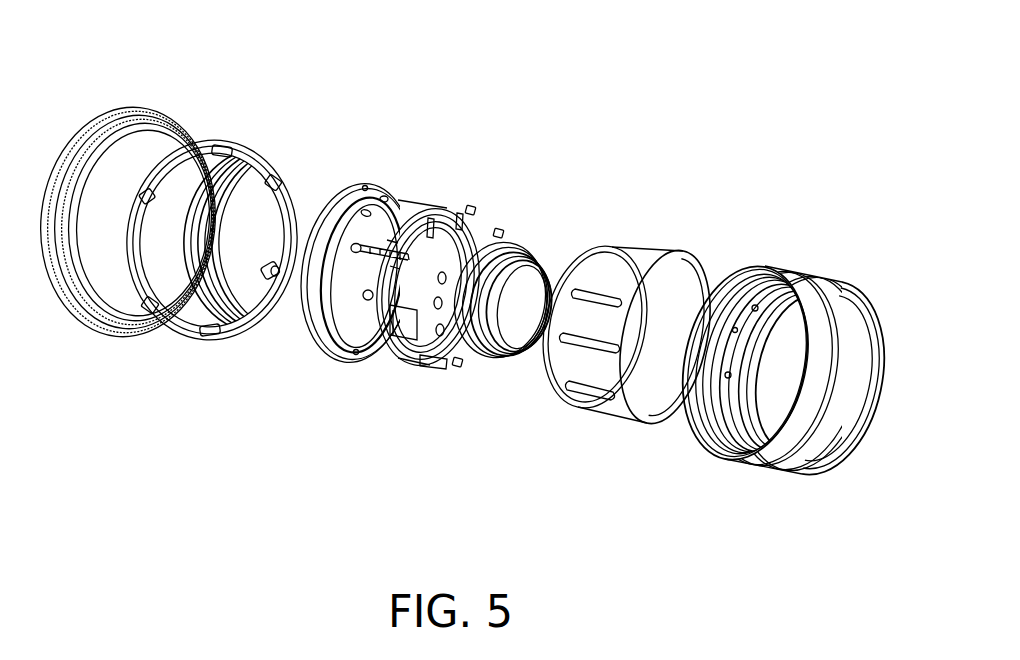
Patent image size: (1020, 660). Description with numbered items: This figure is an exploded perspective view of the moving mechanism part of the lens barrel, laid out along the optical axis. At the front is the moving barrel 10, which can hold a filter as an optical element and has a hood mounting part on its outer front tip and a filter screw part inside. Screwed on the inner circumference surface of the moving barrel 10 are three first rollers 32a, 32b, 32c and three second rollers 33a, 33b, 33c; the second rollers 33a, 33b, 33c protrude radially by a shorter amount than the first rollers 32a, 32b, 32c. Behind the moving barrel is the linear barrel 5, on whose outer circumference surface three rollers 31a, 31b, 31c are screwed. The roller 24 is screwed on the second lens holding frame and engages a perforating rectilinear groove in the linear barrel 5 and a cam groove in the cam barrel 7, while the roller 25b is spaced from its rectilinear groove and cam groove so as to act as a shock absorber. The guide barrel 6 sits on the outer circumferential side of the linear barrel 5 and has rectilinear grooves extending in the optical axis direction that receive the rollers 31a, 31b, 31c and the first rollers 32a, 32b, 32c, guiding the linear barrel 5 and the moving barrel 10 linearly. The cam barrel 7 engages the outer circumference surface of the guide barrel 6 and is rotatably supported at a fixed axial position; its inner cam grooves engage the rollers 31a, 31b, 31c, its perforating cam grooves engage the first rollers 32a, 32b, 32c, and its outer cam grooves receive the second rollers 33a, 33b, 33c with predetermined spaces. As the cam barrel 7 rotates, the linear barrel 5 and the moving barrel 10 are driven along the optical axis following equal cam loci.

The moving barrel 10 is at (112, 337).
The first roller 32a is at (150, 333).
The first roller 32b is at (228, 176).
The first roller 32c is at (273, 295).
The second roller 33a is at (222, 330).
The second roller 33b is at (168, 206).
The second roller 33c is at (287, 180).
The linear barrel 5 is at (384, 362).
The roller 25b is at (383, 197).
The roller 24 is at (420, 373).
The roller 31a is at (376, 262).
The roller 31b is at (466, 206).
The roller 31c is at (456, 366).
The guide barrel 6 is at (617, 418).
The cam barrel 7 is at (738, 455).